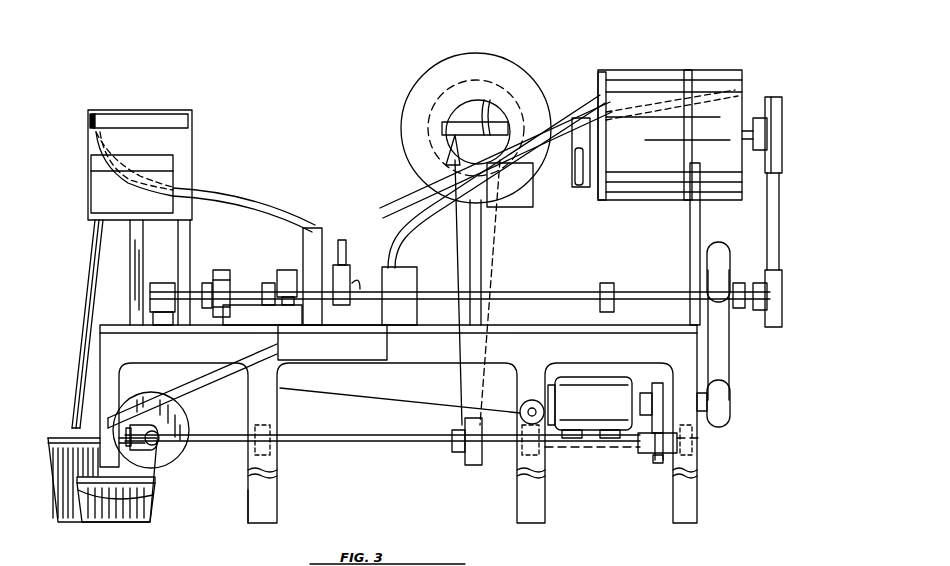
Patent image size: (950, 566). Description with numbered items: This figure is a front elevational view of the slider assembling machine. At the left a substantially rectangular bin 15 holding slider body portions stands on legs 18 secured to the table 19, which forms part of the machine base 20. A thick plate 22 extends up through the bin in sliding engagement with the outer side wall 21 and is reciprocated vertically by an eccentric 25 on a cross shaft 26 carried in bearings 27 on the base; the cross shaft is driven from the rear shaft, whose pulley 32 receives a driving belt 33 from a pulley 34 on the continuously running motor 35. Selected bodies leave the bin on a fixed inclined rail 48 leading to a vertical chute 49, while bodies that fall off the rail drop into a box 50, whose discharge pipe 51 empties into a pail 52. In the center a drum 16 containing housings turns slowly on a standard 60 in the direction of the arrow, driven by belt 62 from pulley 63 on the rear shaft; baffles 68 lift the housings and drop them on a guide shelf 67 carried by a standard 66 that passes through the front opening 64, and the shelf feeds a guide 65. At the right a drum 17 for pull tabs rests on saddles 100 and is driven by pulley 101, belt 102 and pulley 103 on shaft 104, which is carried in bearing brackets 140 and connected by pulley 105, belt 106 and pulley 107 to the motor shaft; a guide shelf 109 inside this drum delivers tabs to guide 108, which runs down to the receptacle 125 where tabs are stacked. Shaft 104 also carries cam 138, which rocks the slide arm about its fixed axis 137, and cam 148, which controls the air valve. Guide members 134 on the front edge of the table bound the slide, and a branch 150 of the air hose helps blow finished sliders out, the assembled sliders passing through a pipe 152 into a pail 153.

The bin 15 is at (153, 96).
The outer side wall 21 is at (85, 122).
The box 50 is at (97, 183).
The thick plate 22 is at (93, 235).
The legs 18 is at (179, 234).
The bearing brackets 140 is at (152, 283).
The cam 148 is at (219, 270).
The fixed axis 137 is at (264, 282).
The cam 138 is at (286, 270).
The fixed inclined rail 48 is at (273, 206).
The vertical chute 49 is at (319, 228).
The guide 65 is at (382, 244).
The opening 64 is at (440, 128).
The baffles 68 is at (430, 84).
The guide shelf 67 is at (486, 95).
The drum 16 is at (496, 51).
The standard 66 is at (478, 237).
The standard 60 is at (516, 275).
The guide 108 is at (556, 160).
The guide shelf 109 is at (660, 97).
The drum 17 is at (723, 64).
The pulley 101 is at (782, 99).
The belt 102 is at (776, 204).
The pulley 103 is at (778, 272).
The saddles 100 is at (690, 224).
The pulley 105 is at (730, 244).
The shaft 104 is at (627, 292).
The belt 106 is at (720, 362).
The pulley 107 is at (732, 397).
The motor 35 is at (592, 378).
The pulley 34 is at (654, 382).
The driving belt 33 is at (655, 466).
The pulley 32 is at (665, 462).
The machine base 20 is at (259, 518).
The belt 62 is at (473, 465).
The pulley 63 is at (452, 456).
The table 19 is at (213, 326).
The guide members 134 is at (284, 319).
The receptacle 125 is at (383, 319).
The branch 150 is at (388, 347).
The pipe 152 is at (198, 385).
The discharge pipe 51 is at (75, 389).
The bearings 27 is at (126, 438).
The eccentric 25 is at (175, 452).
The cross shaft 26 is at (152, 444).
The pail 52 is at (56, 512).
The pail 153 is at (136, 526).